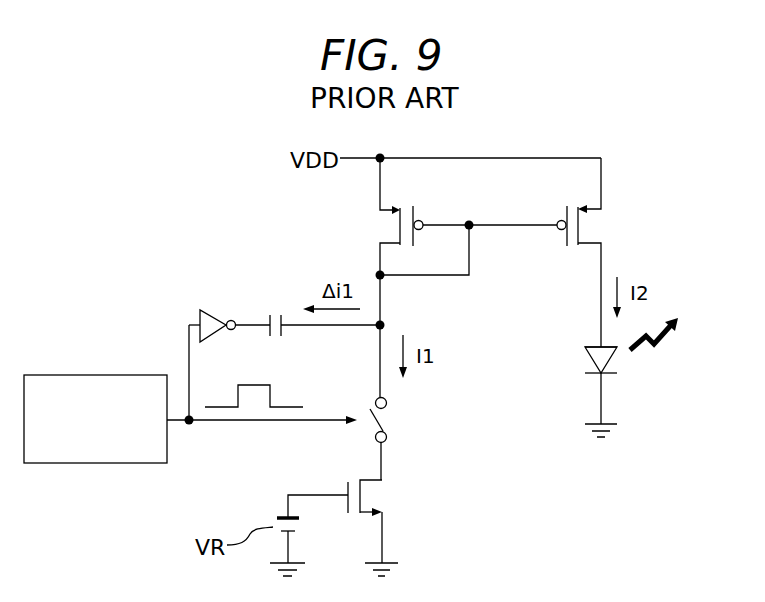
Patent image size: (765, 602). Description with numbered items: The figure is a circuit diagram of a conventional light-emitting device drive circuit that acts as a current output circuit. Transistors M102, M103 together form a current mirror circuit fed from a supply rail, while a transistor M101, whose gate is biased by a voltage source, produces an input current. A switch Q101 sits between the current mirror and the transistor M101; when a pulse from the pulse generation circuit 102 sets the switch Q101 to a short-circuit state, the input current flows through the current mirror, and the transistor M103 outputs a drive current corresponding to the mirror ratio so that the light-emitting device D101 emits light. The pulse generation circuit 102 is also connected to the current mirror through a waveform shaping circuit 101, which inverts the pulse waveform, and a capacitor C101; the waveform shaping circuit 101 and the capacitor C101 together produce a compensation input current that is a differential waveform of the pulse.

The waveform shaping circuit 101 is at (198, 313).
The capacitor C101 is at (277, 312).
The transistor M102 is at (376, 223).
The transistor M103 is at (597, 222).
The light-emitting device D101 is at (615, 378).
The switch Q101 is at (388, 417).
The transistor M101 is at (380, 493).
The pulse generation circuit 102 is at (78, 463).